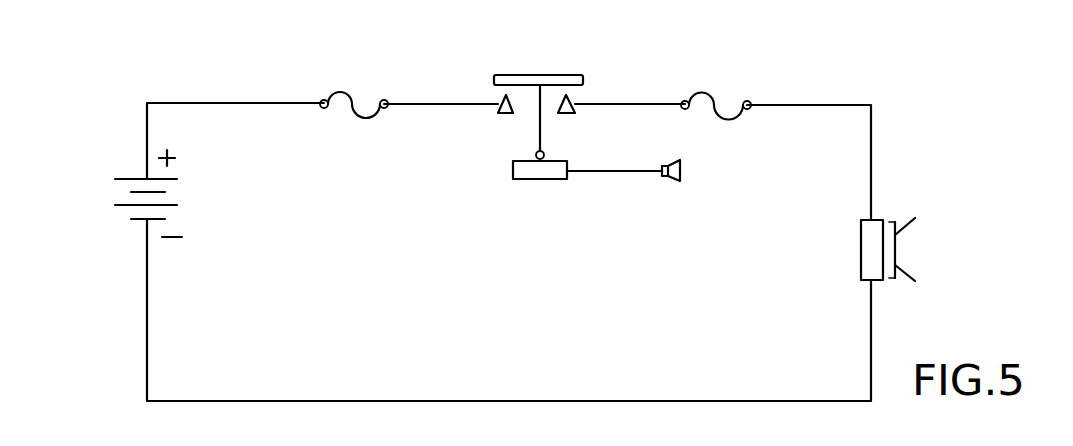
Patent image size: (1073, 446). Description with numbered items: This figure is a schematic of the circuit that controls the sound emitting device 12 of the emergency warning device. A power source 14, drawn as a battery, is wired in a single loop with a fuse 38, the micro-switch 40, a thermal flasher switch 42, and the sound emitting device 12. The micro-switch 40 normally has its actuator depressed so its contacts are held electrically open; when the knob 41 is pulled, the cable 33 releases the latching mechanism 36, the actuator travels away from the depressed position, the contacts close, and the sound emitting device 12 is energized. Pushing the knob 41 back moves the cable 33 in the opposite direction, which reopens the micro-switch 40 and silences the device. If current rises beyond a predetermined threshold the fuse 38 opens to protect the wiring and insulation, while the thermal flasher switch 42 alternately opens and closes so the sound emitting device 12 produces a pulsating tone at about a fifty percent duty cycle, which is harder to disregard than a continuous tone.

The sound emitting device 12 is at (882, 283).
The power source 14 is at (137, 224).
The cable 33 is at (636, 172).
The latching mechanism 36 is at (520, 180).
The fuse 38 is at (333, 88).
The micro-switch 40 is at (566, 77).
The knob 41 is at (681, 172).
The thermal flasher switch 42 is at (752, 98).